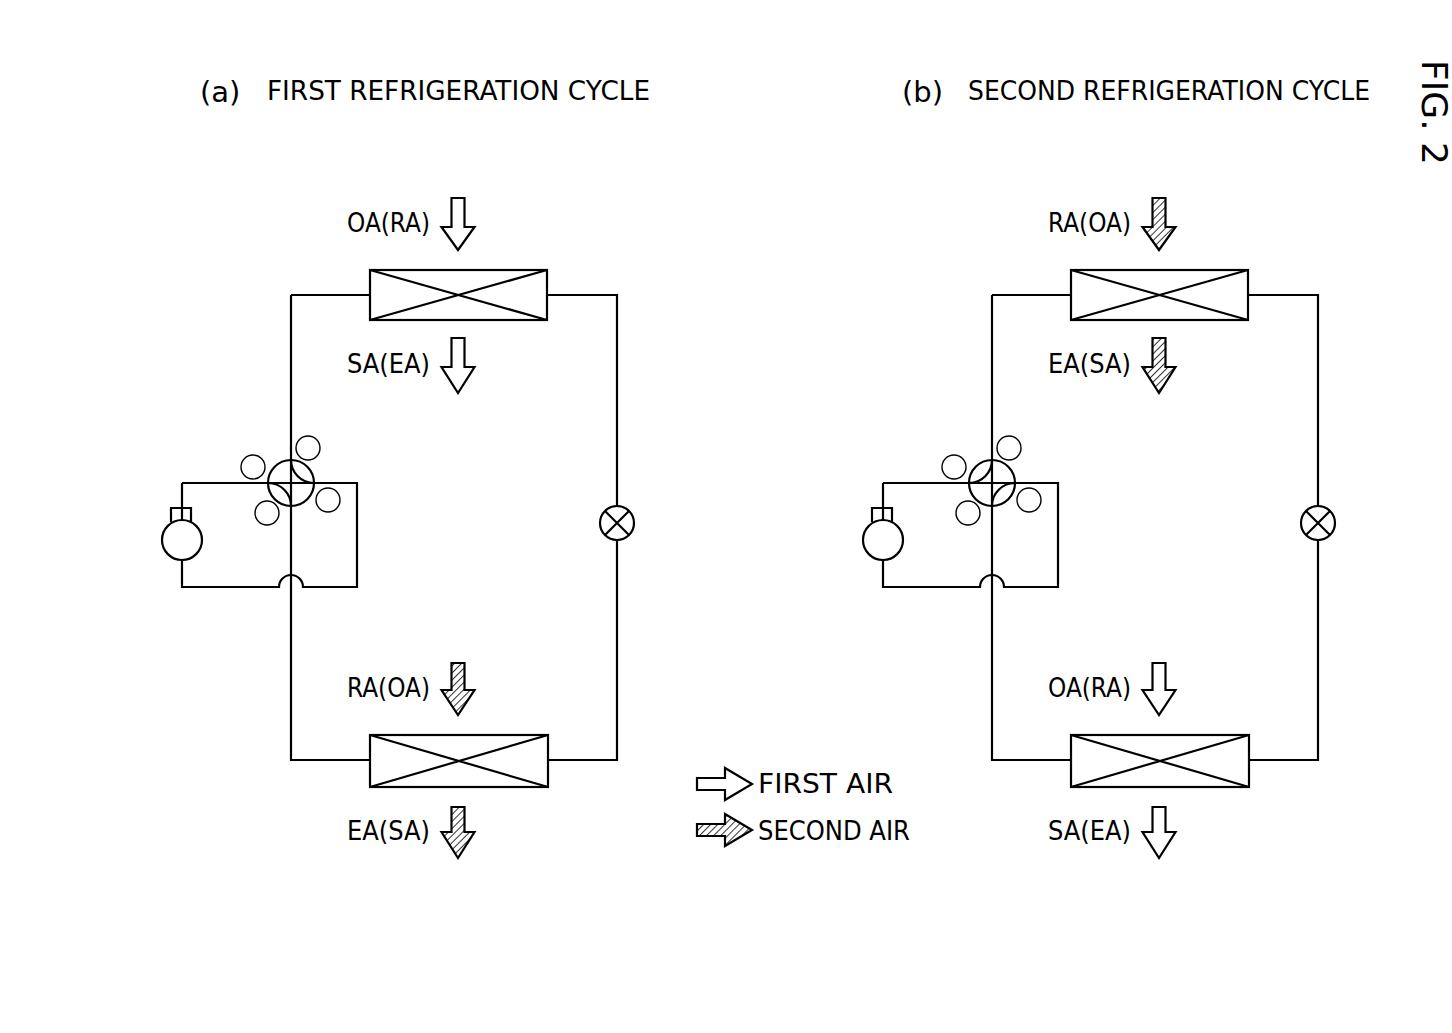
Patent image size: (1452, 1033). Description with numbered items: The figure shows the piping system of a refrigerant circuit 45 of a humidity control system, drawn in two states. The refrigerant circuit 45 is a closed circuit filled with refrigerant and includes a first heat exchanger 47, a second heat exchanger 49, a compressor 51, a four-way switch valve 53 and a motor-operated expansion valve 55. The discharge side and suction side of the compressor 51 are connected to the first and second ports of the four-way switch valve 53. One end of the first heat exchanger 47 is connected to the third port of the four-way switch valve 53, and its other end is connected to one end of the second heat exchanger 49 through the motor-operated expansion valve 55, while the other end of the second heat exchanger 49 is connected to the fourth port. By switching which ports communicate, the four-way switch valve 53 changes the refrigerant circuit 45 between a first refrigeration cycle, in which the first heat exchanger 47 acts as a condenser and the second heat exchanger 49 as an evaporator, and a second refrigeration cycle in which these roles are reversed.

The refrigerant circuit 45 is at (249, 255).
The first heat exchanger 47 is at (525, 787).
The second heat exchanger 49 is at (522, 270).
The compressor 51 is at (161, 540).
The four-way switch valve 53 is at (312, 470).
The motor-operated expansion valve 55 is at (632, 533).